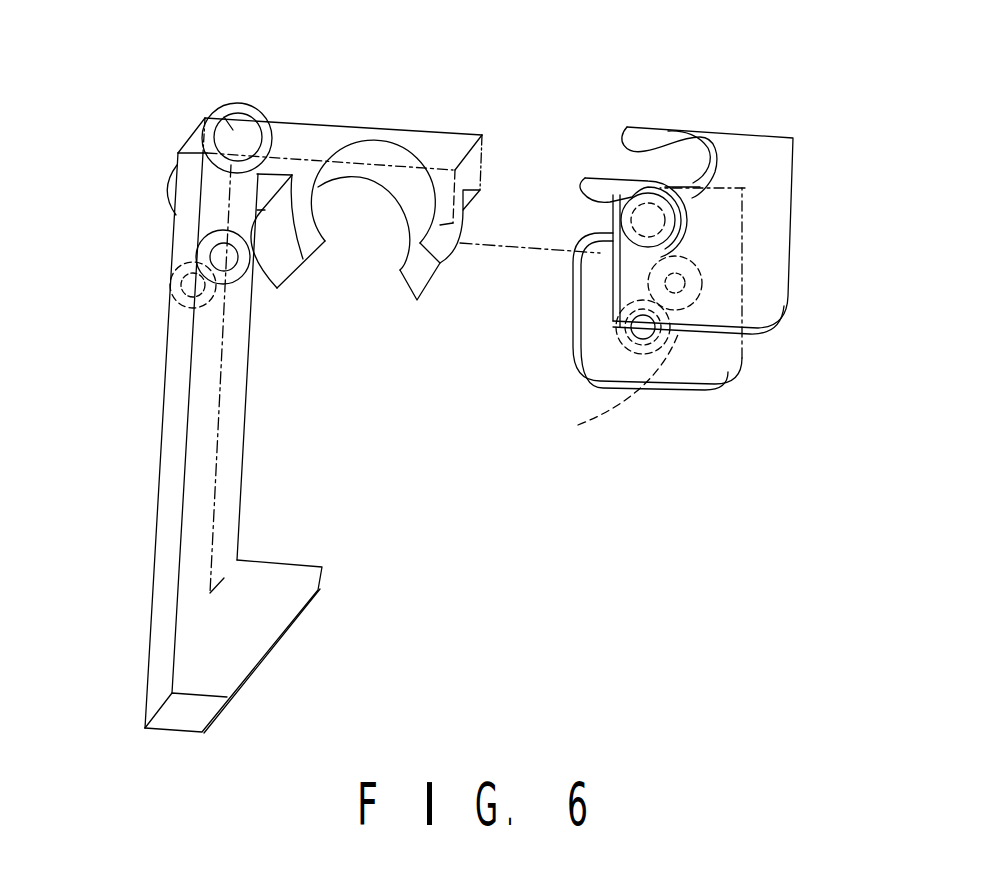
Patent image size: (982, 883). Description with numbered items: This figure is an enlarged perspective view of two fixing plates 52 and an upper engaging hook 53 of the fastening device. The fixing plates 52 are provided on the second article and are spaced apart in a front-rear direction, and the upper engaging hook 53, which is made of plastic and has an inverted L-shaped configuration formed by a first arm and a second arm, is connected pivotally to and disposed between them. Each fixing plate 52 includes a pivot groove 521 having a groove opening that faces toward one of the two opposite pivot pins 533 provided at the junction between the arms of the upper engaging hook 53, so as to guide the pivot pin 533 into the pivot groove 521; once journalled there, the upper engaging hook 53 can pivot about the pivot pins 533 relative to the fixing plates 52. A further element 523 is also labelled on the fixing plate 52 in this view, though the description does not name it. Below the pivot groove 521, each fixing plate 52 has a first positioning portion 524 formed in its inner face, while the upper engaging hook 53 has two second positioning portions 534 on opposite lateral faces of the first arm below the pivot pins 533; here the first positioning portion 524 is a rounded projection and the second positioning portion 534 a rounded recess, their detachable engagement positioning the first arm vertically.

The fixing plate 52 is at (693, 387).
The pivot groove 521 is at (687, 160).
The engaging strip 523 is at (643, 167).
The first positioning portion 524 is at (628, 343).
The upper engaging hook 53 is at (147, 142).
The pivot pin 533 is at (229, 103).
The second positioning portion 534 is at (237, 270).